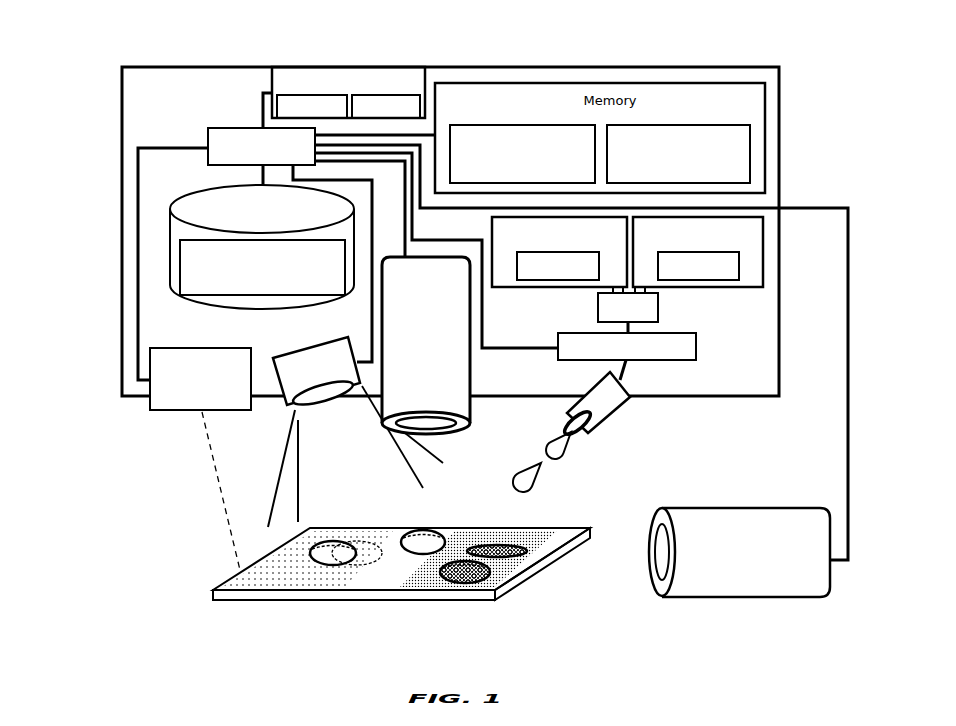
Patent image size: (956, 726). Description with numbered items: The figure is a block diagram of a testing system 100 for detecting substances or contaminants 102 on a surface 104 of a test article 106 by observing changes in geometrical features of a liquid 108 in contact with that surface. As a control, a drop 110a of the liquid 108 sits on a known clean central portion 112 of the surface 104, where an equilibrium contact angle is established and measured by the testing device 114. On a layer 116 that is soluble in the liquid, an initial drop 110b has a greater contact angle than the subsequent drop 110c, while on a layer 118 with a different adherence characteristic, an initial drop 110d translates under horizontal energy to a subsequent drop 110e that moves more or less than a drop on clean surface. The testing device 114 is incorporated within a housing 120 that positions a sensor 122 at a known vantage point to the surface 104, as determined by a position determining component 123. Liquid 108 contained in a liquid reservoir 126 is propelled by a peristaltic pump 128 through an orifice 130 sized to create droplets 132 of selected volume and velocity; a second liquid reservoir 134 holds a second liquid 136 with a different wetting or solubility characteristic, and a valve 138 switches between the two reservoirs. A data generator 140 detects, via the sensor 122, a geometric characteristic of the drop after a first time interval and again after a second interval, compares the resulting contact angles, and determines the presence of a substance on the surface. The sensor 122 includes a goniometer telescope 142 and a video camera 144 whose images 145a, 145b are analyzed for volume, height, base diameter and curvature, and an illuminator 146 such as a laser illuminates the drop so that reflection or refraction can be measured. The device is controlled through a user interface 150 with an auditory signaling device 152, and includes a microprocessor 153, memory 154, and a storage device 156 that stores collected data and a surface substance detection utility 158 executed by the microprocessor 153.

The testing system 100 is at (103, 54).
The contaminant 102 is at (270, 626).
The surface 104 is at (537, 575).
The test article 106 is at (220, 587).
The liquid 108 is at (557, 282).
The drop 110a is at (465, 583).
The initial drop 110b is at (512, 540).
The subsequent drop 110c is at (443, 535).
The initial drop 110d is at (367, 540).
The subsequent drop 110e is at (323, 538).
The central portion 112 is at (362, 582).
The testing device 114 is at (457, 67).
The layer 116 is at (420, 582).
The layer 118 is at (275, 575).
The housing 120 is at (780, 375).
The sensor 122 is at (740, 466).
The position determining component 123 is at (168, 412).
The liquid reservoir 126 is at (498, 288).
The peristaltic pump 128 is at (697, 343).
The orifice 130 is at (573, 447).
The droplets 132 is at (515, 477).
The second liquid reservoir 134 is at (763, 252).
The second liquid 136 is at (739, 266).
The valve 138 is at (658, 308).
The data generator 140 is at (148, 108).
The goniometer telescope 142 is at (763, 508).
The video camera 144 is at (467, 423).
The image 145a is at (482, 125).
The image 145b is at (732, 124).
The illuminator 146 is at (320, 347).
The user interface 150 is at (377, 67).
The auditory signaling device 152 is at (282, 94).
The microprocessor 153 is at (208, 133).
The memory 154 is at (407, 94).
The storage device 156 is at (170, 210).
The surface substance detection utility 158 is at (182, 270).